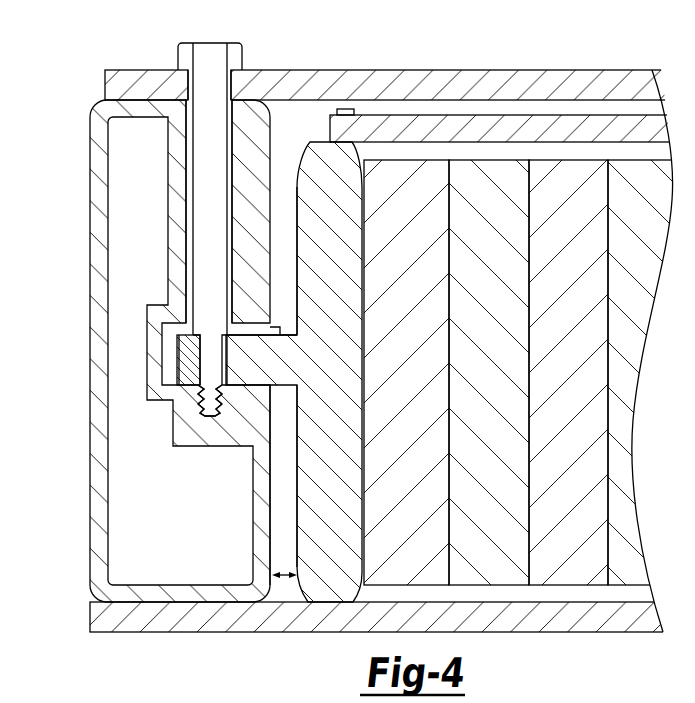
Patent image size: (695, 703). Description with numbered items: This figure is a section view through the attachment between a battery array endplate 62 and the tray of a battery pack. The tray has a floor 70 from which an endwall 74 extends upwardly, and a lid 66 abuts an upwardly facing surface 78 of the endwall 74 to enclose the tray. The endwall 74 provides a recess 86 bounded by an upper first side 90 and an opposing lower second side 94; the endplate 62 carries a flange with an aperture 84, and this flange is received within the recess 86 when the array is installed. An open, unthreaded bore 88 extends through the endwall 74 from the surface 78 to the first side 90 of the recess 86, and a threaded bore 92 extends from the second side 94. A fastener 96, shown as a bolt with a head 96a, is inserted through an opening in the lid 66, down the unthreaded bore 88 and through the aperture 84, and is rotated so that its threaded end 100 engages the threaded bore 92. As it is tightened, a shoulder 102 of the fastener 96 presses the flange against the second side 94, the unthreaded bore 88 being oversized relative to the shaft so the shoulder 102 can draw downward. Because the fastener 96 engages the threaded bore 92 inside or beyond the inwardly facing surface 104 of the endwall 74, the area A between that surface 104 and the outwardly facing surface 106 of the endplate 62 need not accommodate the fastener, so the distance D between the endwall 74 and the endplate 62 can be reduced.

The endplate 62 is at (294, 410).
The lid 66 is at (417, 54).
The floor 70 is at (392, 650).
The endwall 74 is at (148, 351).
The surface 78 is at (146, 57).
The aperture 84 is at (242, 381).
The recess 86 is at (294, 320).
The unthreaded bore 88 is at (180, 211).
The first side 90 is at (199, 206).
The threaded bore 92 is at (190, 437).
The second side 94 is at (155, 360).
The fastener 96 is at (219, 39).
The bolt head (partial) 96a is at (186, 695).
The threaded end 100 is at (209, 448).
The shoulder 102 is at (301, 297).
The inwardly facing surface 104 is at (248, 485).
The outwardly facing surface 106 is at (311, 377).
The area A is at (322, 80).
The distance D is at (284, 624).